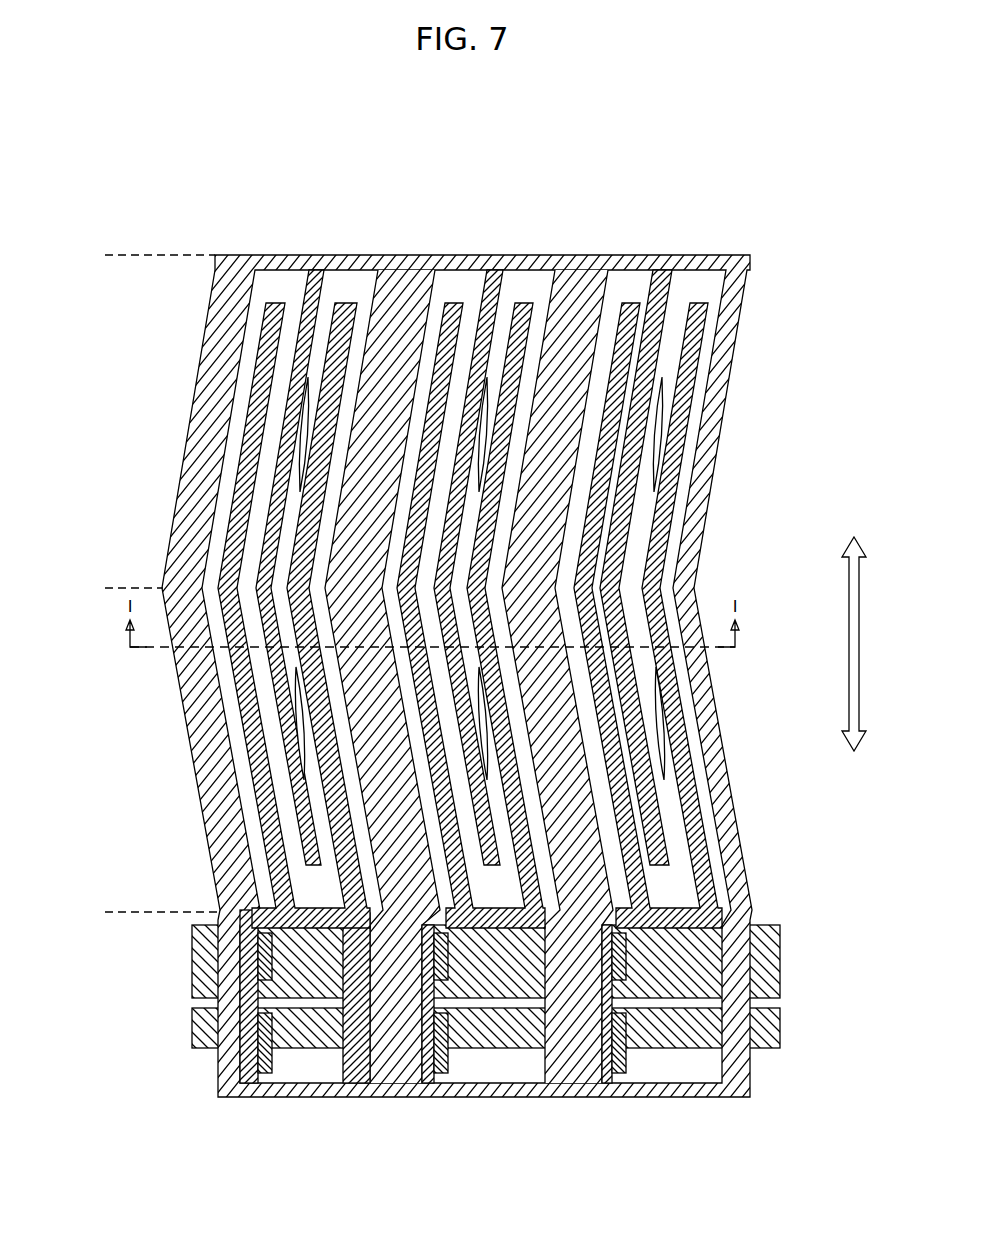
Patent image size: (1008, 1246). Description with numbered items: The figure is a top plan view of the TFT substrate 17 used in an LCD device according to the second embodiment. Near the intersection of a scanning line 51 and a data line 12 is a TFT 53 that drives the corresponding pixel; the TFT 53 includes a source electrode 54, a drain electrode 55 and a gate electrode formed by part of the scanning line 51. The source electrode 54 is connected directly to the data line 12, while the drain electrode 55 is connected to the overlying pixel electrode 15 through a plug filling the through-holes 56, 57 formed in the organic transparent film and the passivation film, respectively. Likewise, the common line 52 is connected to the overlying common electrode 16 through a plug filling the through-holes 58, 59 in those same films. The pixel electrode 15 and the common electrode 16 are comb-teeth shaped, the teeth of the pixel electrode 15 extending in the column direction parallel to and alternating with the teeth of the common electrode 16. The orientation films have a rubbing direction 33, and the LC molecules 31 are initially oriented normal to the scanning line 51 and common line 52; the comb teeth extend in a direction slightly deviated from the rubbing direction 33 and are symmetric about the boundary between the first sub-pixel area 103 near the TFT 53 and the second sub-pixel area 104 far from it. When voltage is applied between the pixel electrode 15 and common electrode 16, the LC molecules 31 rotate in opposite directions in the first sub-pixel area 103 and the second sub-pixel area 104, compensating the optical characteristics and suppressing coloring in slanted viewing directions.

The data line 12 is at (570, 262).
The pixel electrode 15 is at (526, 302).
The common electrode 16 is at (631, 264).
The TFT substrate 17 is at (716, 140).
The LC molecules 31 is at (665, 416).
The rubbing direction 33 is at (848, 640).
The scanning line 51 is at (648, 1047).
The common line 52 is at (780, 964).
The TFT 53 is at (720, 1178).
The source electrode 54 is at (610, 1047).
The drain electrode 55 is at (330, 1062).
The through-hole 56 is at (292, 1062).
The through-hole 57 is at (284, 1062).
The through-hole 58 is at (407, 1062).
The through-hole 59 is at (384, 1062).
The first half area (first sub-pixel area) 103 is at (104, 588).
The second half area (second sub-pixel area) 104 is at (104, 255).